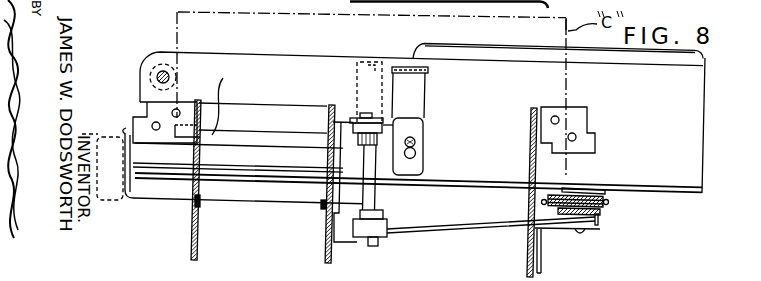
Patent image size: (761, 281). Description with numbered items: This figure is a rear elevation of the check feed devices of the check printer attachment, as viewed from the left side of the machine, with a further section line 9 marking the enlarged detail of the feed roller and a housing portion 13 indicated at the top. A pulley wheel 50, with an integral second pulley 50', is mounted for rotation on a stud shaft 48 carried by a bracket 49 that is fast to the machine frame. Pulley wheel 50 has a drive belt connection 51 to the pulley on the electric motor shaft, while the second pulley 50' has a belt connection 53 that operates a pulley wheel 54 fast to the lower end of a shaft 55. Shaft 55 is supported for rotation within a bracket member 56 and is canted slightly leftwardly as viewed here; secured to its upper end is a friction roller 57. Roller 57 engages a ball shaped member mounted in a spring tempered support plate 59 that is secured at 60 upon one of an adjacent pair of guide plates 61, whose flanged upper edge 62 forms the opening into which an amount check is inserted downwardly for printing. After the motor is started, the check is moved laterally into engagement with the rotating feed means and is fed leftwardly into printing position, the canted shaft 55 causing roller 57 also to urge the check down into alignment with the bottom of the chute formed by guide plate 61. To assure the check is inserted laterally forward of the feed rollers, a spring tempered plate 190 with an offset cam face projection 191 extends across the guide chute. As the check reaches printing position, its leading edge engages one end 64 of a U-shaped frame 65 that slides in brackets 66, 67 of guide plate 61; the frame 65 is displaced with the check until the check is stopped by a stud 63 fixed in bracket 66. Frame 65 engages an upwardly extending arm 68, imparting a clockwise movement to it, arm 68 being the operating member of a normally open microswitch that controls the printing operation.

The section line 9- 9 is at (323, 130).
The housing 13 is at (679, 0).
The stud shaft 48 is at (577, 194).
The bracket 49 is at (538, 171).
The pulley wheel 50 is at (595, 184).
The second pulley 50' is at (602, 224).
The drive belt connection 51 is at (607, 202).
The belt connection 53 is at (473, 226).
The pulley wheel 54 is at (390, 242).
The shaft 55 is at (378, 193).
The bracket member 56 is at (340, 243).
The friction roller 57 is at (384, 124).
The spring tempered support plate 59 is at (368, 85).
The securing point 60 is at (373, 52).
The guide plate 61 is at (699, 134).
The flanged upper edge 62 is at (683, 60).
The stud 63 is at (146, 69).
The end of U-shaped frame 64 is at (228, 100).
The U-shaped frame 65 is at (173, 203).
The bracket 66 is at (199, 225).
The bracket 67 is at (325, 230).
The arm 68 is at (126, 128).
The spring tempered plate 190 is at (420, 90).
The offset cam face projection 191 is at (415, 66).